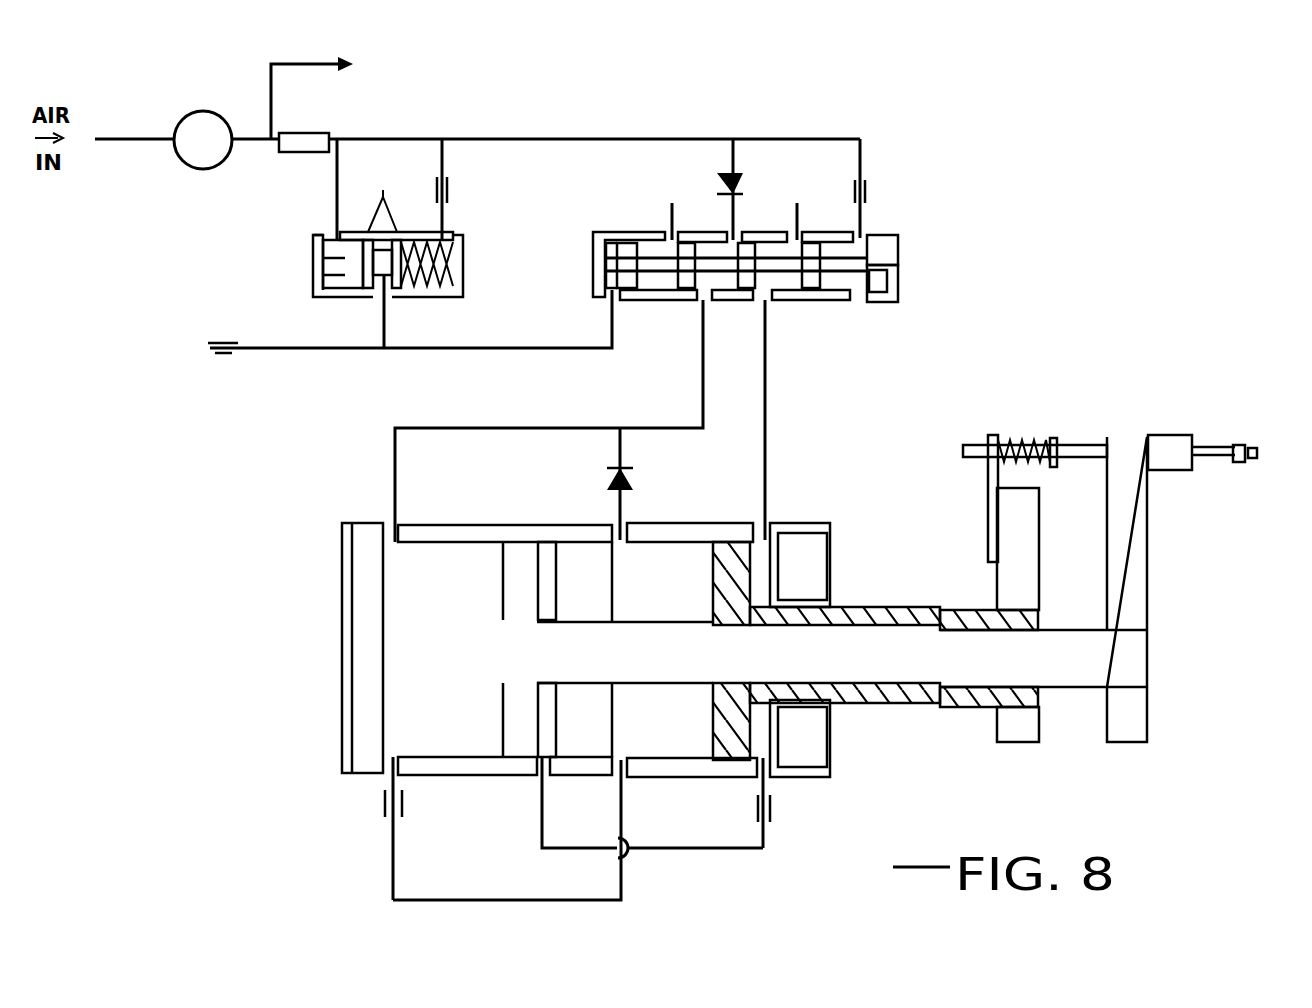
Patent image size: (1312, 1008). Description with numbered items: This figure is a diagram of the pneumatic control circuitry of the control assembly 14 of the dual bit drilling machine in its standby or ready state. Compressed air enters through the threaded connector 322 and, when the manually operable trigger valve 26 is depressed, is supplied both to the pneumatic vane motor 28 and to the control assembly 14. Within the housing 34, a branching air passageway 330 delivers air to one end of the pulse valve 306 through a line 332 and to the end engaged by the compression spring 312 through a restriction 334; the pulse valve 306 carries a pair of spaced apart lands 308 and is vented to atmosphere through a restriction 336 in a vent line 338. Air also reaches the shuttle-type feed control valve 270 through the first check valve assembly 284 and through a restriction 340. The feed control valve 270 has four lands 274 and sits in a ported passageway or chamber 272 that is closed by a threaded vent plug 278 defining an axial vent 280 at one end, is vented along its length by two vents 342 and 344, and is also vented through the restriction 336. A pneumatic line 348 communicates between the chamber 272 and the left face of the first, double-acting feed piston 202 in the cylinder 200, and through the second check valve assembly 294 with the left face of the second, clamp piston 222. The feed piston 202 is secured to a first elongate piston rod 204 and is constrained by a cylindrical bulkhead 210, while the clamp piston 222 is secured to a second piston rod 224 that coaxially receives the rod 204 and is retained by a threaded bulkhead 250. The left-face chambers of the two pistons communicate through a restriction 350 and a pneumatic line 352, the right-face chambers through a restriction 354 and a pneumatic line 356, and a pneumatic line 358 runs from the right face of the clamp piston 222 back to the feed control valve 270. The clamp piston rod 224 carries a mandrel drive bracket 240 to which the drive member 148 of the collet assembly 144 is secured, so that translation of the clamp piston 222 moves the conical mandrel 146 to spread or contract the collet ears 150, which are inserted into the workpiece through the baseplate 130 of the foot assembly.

The control assembly 14 is at (226, 472).
The trigger valve 26 is at (205, 169).
The pneumatic vane motor 28 is at (492, 93).
The housing 34 is at (522, 523).
The baseplate 130 is at (1148, 578).
The collet assembly 144 is at (1027, 421).
The conical mandrel 146 is at (1254, 463).
The drive member 148 is at (988, 443).
The collet ears 150 is at (1210, 450).
The cylinder 200 is at (433, 757).
The feed piston 202 is at (517, 580).
The first elongate piston rod 204 is at (1148, 657).
The cylindrical bulkhead 210 is at (582, 587).
The clamp piston 222 is at (727, 577).
The second elongate piston rod 224 is at (882, 612).
The mandrel drive bracket 240 is at (1027, 517).
The threaded bulkhead 250 is at (807, 555).
The feed control valve 270 is at (787, 271).
The ported passageway 272 is at (853, 287).
The lands 274 is at (818, 278).
The threaded vent plug 278 is at (887, 247).
The vent 280 is at (902, 265).
The first check valve assembly 284 is at (737, 176).
The second check valve assembly 294 is at (633, 474).
The pulse valve 306 is at (333, 267).
The lands 308 is at (389, 195).
The compression spring 312 is at (453, 256).
The threaded connector 322 is at (309, 132).
The branching air passageway 330 is at (482, 139).
The line 332 is at (336, 180).
The restriction 334 is at (450, 192).
The restriction 336 is at (227, 353).
The vent line 338 is at (468, 347).
The restriction 340 is at (868, 193).
The vent 342 is at (695, 177).
The vent 344 is at (827, 183).
The pneumatic line 348 is at (502, 427).
The restriction 350 is at (385, 807).
The pneumatic line 352 is at (453, 900).
The restriction 354 is at (770, 808).
The pneumatic line 356 is at (693, 848).
The pneumatic line 358 is at (778, 425).